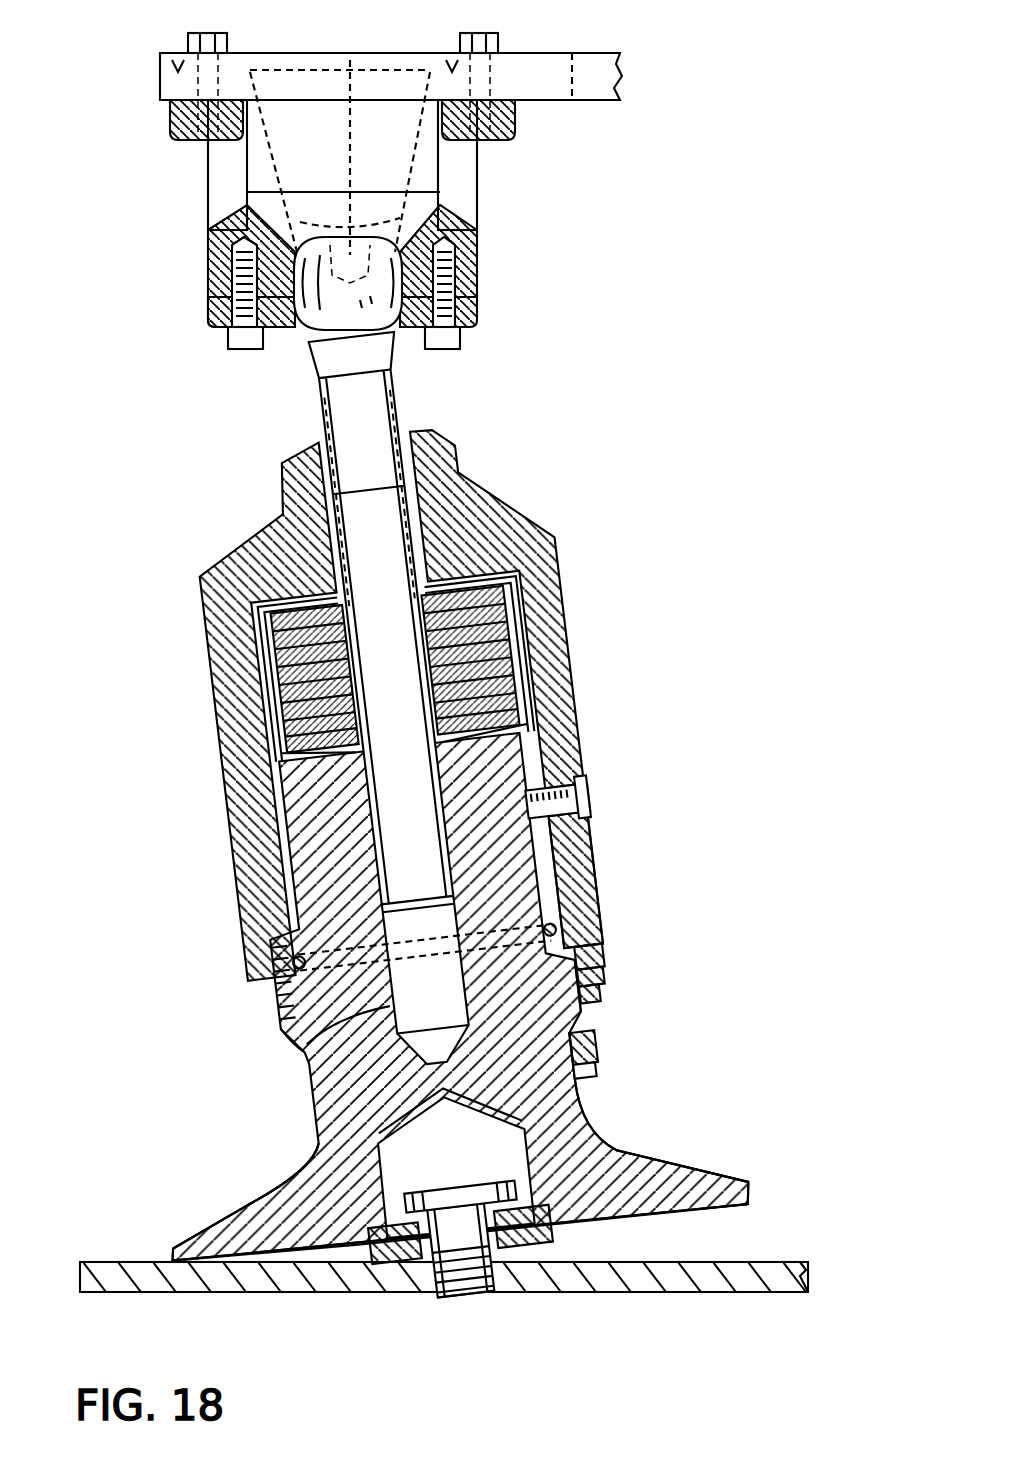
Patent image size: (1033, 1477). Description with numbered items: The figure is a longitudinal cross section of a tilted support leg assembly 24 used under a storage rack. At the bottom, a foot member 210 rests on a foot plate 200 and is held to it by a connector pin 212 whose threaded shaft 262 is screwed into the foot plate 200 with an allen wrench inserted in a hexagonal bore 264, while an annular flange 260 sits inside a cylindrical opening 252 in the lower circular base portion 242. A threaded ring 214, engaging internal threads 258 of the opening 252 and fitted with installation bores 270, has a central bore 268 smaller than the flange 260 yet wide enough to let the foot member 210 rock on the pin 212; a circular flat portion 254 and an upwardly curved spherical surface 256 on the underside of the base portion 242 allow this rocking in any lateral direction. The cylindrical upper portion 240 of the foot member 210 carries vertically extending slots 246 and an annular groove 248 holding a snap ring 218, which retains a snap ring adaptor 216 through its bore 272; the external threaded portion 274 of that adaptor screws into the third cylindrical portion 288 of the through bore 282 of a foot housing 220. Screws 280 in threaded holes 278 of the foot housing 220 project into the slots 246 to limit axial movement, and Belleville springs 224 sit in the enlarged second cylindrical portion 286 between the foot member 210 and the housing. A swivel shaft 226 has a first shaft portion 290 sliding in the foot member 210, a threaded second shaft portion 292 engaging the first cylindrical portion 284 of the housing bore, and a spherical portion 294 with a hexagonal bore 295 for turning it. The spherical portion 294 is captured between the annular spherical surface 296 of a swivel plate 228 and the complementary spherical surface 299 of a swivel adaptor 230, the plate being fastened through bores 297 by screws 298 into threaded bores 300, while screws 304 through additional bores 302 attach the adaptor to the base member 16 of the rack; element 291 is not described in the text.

The base member 16 is at (558, 100).
The support leg assembly 24 is at (472, 840).
The foot plate 200 is at (207, 1296).
The foot member 210 is at (648, 1157).
The connector pin 212 is at (546, 1270).
The threaded ring 214 is at (545, 1237).
The snap ring adaptor 216 is at (584, 983).
The snap ring 218 is at (596, 940).
The foot housing 220 is at (588, 860).
The Belleville washers or springs 224 is at (522, 656).
The swivel shaft 226 is at (414, 400).
The swivel plate 228 is at (356, 236).
The swivel adaptor 230 is at (480, 235).
The cylindrical upper portion 240 is at (592, 880).
The lower circular base portion 242 is at (240, 1215).
The vertically extending slots 246 is at (586, 826).
The annular groove 248 is at (270, 948).
The cylindrical opening 252 is at (530, 1148).
The circular flat portion 254 is at (620, 1228).
The upwardly curved portion or spherical surface 256 is at (725, 1192).
The internal threads 258 is at (330, 1262).
The annular flange 260 is at (440, 1185).
The shaft 262 is at (396, 1270).
The hexagonal bore 264 is at (462, 1297).
The bore 268 is at (412, 1226).
The bores 270 is at (520, 1228).
The bore 272 is at (545, 985).
The external threaded portion 274 is at (598, 963).
The threaded holes 278 is at (584, 780).
The screws 280 is at (588, 800).
The through bore 282 is at (514, 613).
The first cylindrical portion 284 is at (445, 545).
The enlarged second cylindrical portion 286 is at (540, 690).
The third cylindrical portion 288 is at (597, 905).
The first shaft portion 290 is at (375, 840).
The housing lower plate 291 is at (480, 305).
The second shaft portion 292 is at (325, 412).
The spherical portion 294 is at (303, 333).
The hexagonal bore 295 is at (374, 157).
The central annular spherical surface 296 is at (325, 162).
The bores 297 is at (212, 318).
The screws 298 is at (235, 348).
The complementary annular spherical surface 299 is at (409, 162).
The threaded bores 300 is at (215, 278).
The additional bores 302 is at (180, 118).
The screws 304 is at (192, 40).